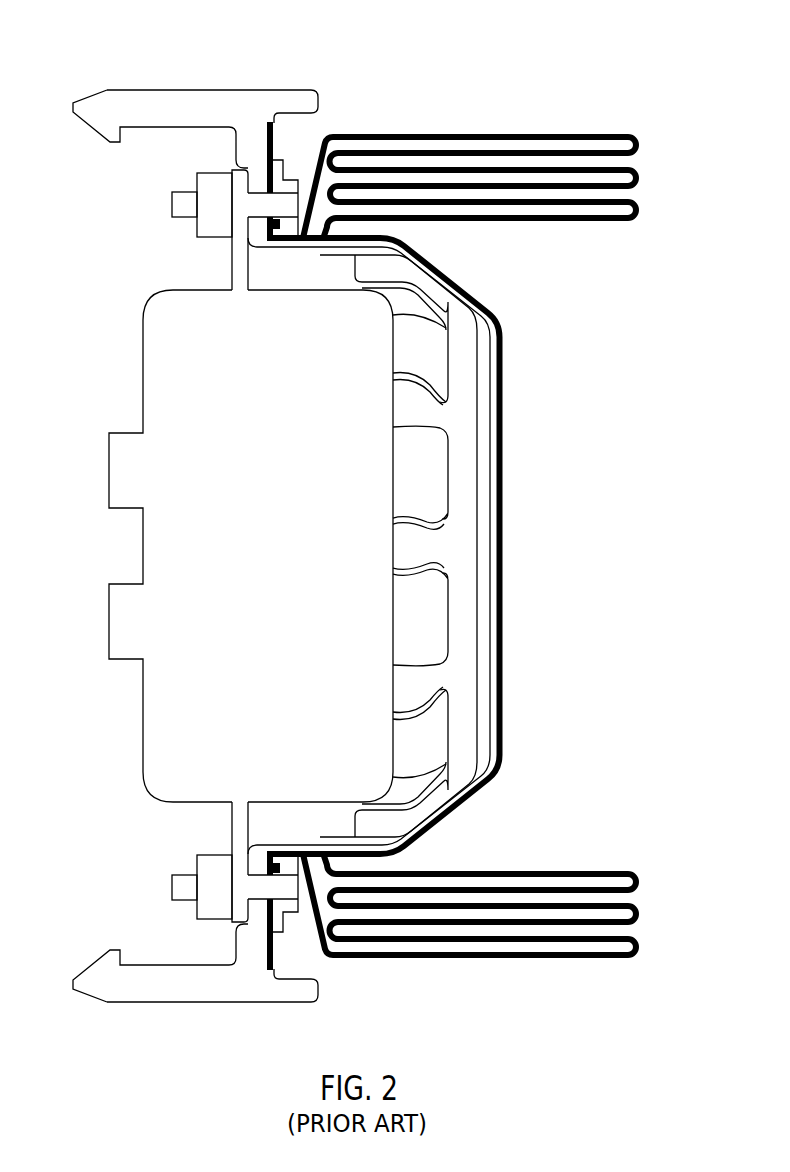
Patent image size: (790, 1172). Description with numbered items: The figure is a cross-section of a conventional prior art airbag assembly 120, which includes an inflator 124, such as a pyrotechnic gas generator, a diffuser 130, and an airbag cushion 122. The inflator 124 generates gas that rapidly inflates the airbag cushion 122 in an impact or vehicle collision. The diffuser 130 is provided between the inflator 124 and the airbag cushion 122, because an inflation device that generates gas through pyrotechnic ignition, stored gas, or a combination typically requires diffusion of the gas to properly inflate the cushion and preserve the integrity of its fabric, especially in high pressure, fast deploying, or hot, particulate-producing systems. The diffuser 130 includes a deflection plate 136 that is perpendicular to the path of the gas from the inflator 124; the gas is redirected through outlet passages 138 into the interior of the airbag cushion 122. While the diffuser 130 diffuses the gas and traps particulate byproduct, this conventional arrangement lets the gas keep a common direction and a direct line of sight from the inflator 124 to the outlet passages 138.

The airbag assembly 120 is at (508, 106).
The airbag cushion 122 is at (555, 958).
The inflator 124 is at (165, 367).
The diffuser 130 is at (463, 538).
The deflection plate 136 is at (485, 445).
The outlet passages 138 is at (430, 362).